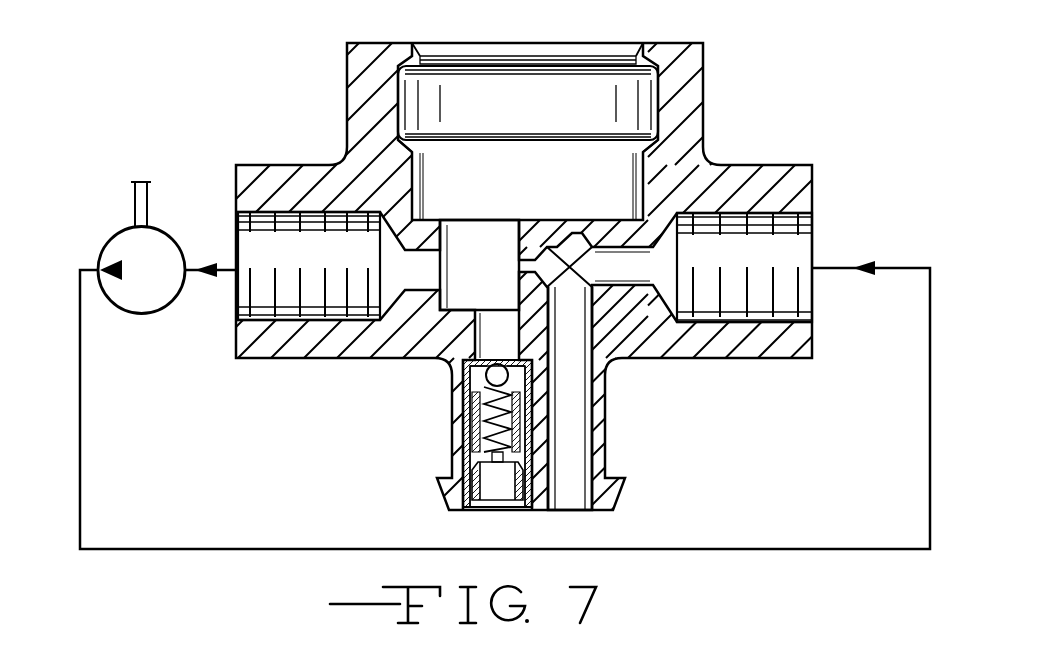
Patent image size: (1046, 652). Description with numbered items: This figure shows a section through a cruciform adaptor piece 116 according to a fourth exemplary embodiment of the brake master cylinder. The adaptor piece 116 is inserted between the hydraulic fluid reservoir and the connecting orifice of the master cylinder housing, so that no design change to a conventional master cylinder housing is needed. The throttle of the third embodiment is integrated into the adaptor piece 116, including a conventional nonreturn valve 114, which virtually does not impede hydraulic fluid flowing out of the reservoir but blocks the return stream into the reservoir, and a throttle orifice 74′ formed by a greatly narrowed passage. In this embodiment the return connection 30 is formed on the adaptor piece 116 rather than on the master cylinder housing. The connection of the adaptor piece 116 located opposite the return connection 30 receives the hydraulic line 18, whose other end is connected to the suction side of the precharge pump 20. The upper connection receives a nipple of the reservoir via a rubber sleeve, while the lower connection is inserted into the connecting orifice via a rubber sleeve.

The adaptor piece 116 is at (760, 112).
The throttle orifice 74′ is at (500, 262).
The return connection 30 is at (825, 236).
The nonreturn valve 114 is at (448, 435).
The hydraulic line 18 is at (187, 267).
The precharge pump 20 is at (134, 313).